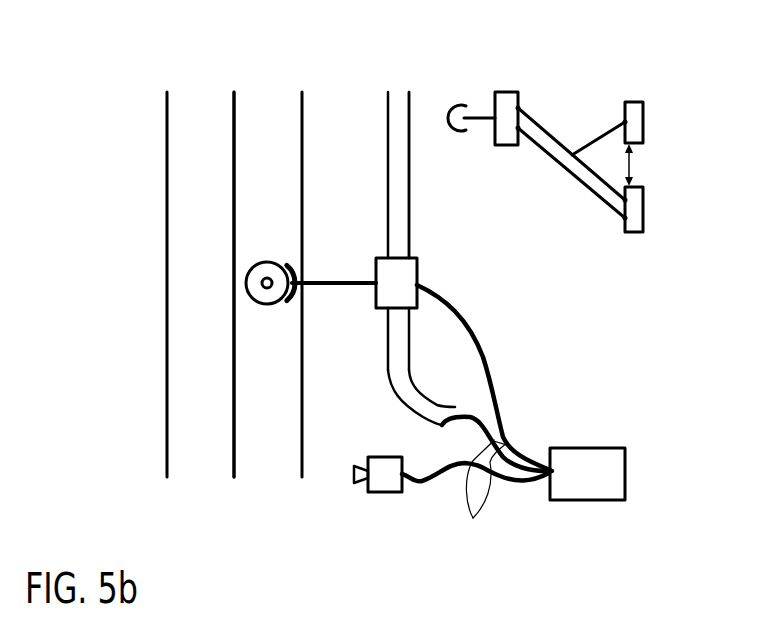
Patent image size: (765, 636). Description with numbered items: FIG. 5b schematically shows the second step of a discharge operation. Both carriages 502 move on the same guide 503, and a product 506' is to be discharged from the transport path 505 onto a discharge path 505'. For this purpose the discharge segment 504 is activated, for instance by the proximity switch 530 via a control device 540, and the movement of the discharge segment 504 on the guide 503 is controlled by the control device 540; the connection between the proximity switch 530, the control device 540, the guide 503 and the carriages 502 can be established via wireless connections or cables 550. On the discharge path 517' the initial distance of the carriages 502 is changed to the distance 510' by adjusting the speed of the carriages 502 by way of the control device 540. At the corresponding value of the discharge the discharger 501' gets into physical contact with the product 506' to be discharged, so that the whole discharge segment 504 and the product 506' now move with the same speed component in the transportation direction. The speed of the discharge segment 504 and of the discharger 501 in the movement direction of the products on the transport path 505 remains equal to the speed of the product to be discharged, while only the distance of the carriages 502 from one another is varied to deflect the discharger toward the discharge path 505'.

The discharger 501 is at (334, 321).
The discharger 501' is at (492, 88).
The carriages 502 is at (634, 102).
The guide 503 is at (410, 202).
The discharge segment 504 is at (346, 265).
The transport path 505 is at (268, 323).
The discharge path 505' is at (200, 323).
The product to be discharged 506' is at (268, 259).
The distance 510' is at (652, 165).
The discharge path 517' is at (442, 175).
The proximity switch 530 is at (386, 493).
The control device 540 is at (592, 448).
The cables 550 is at (477, 420).